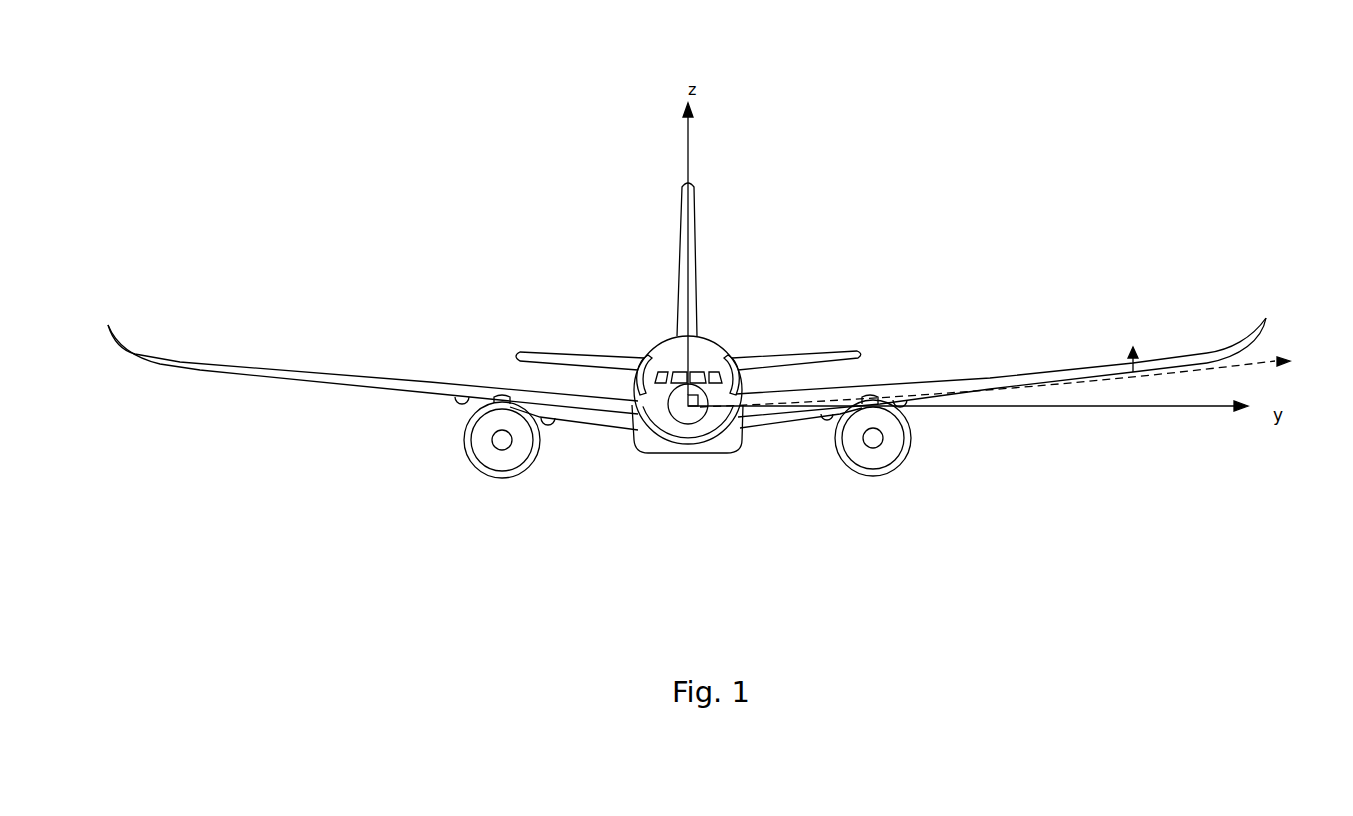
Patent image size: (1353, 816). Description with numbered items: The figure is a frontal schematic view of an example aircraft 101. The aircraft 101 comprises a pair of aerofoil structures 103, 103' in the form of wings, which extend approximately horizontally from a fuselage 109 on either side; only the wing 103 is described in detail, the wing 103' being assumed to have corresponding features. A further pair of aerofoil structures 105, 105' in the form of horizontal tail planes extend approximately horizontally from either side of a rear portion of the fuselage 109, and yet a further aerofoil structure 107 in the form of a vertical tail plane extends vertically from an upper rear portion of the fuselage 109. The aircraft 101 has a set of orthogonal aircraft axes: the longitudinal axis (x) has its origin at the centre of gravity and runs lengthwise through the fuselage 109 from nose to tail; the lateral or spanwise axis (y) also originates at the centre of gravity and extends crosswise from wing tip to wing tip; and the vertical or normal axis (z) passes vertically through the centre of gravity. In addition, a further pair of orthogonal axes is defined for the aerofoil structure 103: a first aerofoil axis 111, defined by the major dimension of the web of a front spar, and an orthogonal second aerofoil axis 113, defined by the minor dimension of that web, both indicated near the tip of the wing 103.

The aircraft 101 is at (346, 164).
The aerofoil structure 103 is at (1001, 354).
The aerofoil structure 103' is at (373, 406).
The aerofoil structure 105 is at (839, 304).
The aerofoil structure 105' is at (539, 329).
The aerofoil structure 107 is at (693, 213).
The fuselage 109 is at (653, 427).
The first aerofoil axis 111 is at (1262, 363).
The second aerofoil axis 113 is at (1123, 365).